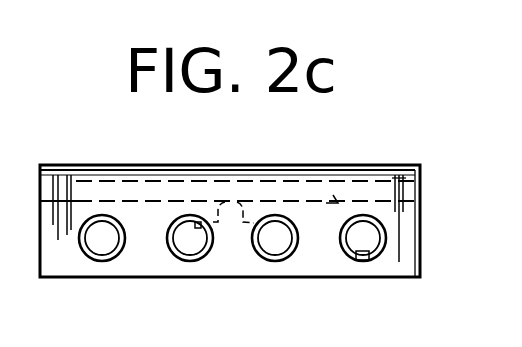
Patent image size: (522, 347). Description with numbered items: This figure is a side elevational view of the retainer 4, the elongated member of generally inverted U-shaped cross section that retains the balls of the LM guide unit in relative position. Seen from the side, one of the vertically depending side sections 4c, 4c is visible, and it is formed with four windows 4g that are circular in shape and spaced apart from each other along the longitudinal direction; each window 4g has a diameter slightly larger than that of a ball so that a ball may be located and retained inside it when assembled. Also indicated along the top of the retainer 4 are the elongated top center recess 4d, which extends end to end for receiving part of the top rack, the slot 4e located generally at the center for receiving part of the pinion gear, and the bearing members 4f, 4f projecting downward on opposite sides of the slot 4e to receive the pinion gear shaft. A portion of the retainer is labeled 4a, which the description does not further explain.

The retainer 4 is at (423, 191).
The mounting portion 4a is at (82, 200).
The side section 4c is at (408, 237).
The top center recess 4d is at (131, 200).
The slot 4e is at (324, 204).
The bearing member 4f is at (225, 203).
The window 4g is at (367, 262).